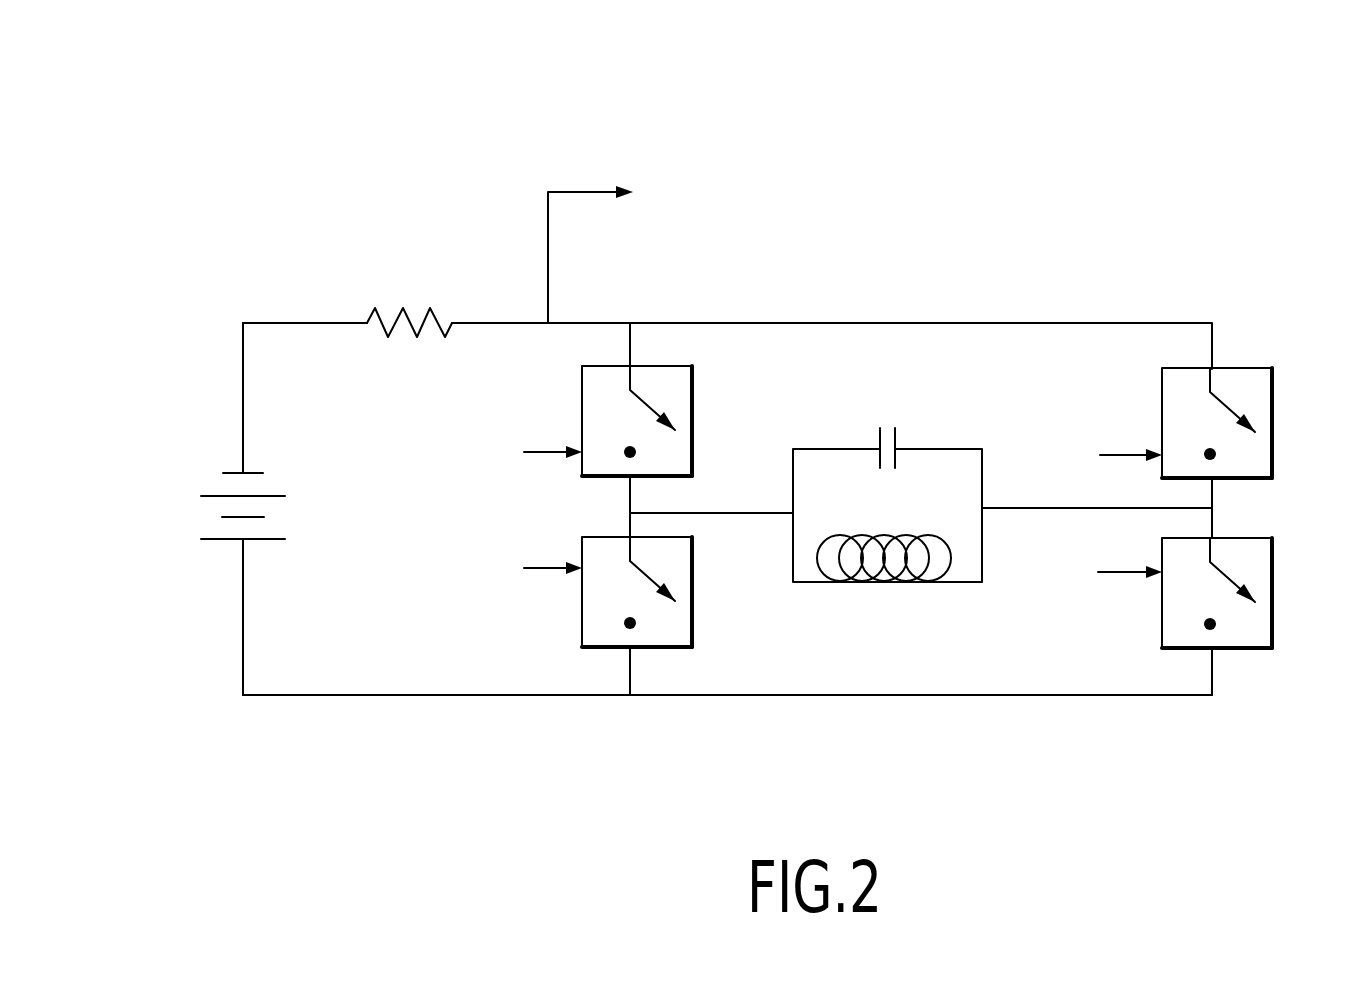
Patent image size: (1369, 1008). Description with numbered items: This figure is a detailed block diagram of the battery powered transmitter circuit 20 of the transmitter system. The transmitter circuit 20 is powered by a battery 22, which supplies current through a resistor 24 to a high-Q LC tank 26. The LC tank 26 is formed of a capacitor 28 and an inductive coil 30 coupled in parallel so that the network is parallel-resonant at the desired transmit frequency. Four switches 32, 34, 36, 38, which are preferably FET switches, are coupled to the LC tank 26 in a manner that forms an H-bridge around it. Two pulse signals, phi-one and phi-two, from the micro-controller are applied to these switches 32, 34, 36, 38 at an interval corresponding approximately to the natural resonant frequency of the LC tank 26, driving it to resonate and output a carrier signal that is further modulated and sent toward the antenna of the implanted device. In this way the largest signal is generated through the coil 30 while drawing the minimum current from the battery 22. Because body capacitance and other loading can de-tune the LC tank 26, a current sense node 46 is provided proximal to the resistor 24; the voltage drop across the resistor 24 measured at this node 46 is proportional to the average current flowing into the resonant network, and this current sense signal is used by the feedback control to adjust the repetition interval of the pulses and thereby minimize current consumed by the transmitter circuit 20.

The transmitter circuit 20 is at (982, 140).
The battery 22 is at (225, 555).
The resistor 24 is at (366, 320).
The high-Q LC tank 26 is at (918, 567).
The capacitor 28 is at (905, 441).
The inductive coil 30 is at (851, 582).
The switch 32 is at (693, 412).
The switch 34 is at (693, 598).
The switch 36 is at (1273, 412).
The switch 38 is at (1273, 598).
The node 46 is at (549, 323).